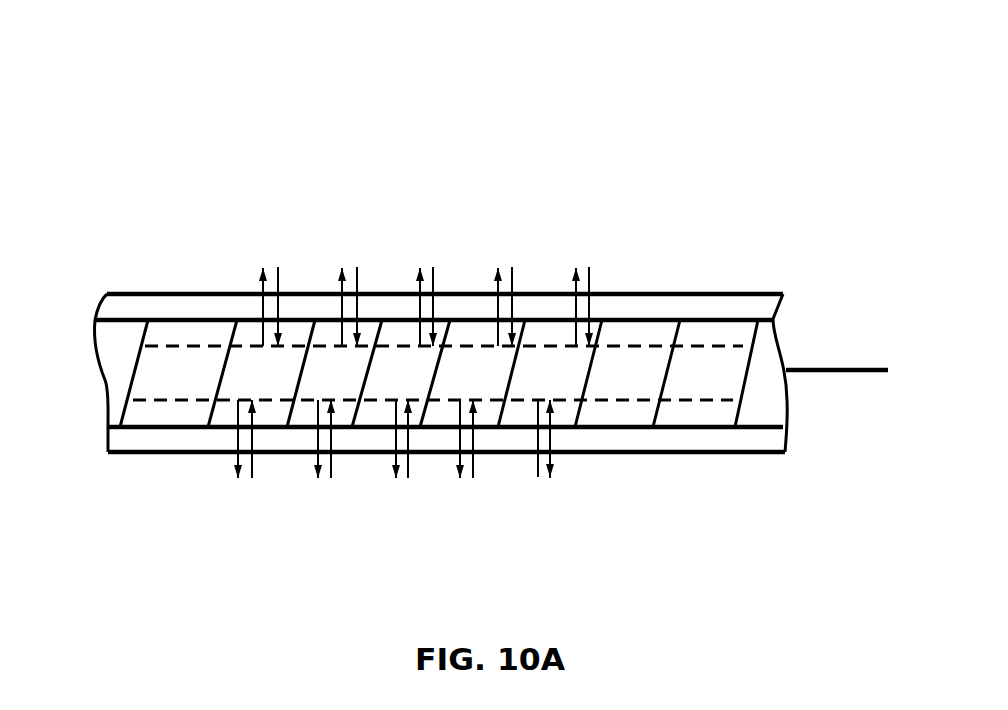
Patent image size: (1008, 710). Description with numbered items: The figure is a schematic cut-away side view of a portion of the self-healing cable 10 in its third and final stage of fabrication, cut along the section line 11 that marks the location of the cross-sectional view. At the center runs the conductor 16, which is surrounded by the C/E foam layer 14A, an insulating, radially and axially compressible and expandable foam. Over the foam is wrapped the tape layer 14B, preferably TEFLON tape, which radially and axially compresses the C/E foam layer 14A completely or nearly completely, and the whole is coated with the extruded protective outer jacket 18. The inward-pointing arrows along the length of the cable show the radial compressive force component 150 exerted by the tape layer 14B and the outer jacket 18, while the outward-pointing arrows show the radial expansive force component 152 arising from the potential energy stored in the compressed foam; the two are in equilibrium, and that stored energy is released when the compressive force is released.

The self-healing cable 10 is at (197, 202).
The section line 11- 11 is at (160, 243).
The C/E foam layer 14A is at (628, 343).
The tape layer 14B is at (710, 316).
The conductor 16 is at (812, 367).
The outer jacket 18 is at (747, 453).
The radial compressive force component 150 is at (355, 275).
The radial expansive force component 152 is at (576, 268).